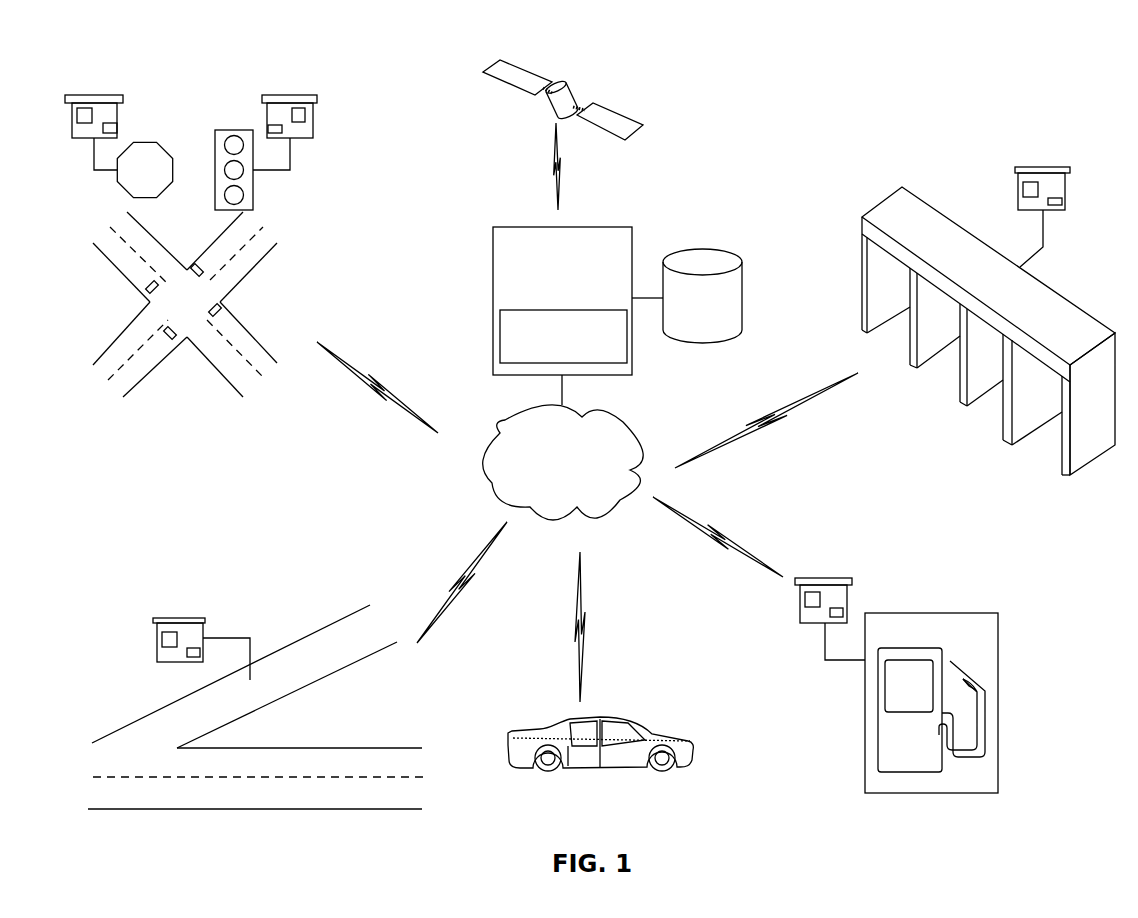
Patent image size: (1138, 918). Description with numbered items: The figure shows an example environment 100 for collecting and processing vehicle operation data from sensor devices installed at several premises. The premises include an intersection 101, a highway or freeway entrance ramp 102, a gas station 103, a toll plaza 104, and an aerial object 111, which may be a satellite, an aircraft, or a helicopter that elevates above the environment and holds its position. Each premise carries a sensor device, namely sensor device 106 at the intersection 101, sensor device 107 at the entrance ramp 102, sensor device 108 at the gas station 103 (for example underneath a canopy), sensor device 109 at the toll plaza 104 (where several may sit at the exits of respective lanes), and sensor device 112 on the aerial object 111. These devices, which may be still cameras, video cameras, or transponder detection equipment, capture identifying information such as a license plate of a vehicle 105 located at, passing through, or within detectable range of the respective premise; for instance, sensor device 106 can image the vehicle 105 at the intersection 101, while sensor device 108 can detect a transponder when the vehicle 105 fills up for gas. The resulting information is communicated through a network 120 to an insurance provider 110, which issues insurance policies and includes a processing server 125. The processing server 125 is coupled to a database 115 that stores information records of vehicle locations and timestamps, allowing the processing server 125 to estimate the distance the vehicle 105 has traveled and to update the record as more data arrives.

The environment 100 is at (782, 108).
The intersection 101 is at (350, 203).
The highway or freeway entrance ramp 102 is at (278, 604).
The gas station 103 is at (936, 588).
The toll plaza 104 is at (865, 188).
The vehicle 105 is at (563, 718).
The sensor device 106 is at (313, 115).
The sensor device 107 is at (170, 617).
The sensor device 108 is at (820, 577).
The sensor device 109 is at (1040, 164).
The insurance provider 110 is at (600, 226).
The aerial object 111 is at (567, 56).
The sensor device 112 is at (568, 91).
The database 115 is at (705, 246).
The network 120 is at (517, 413).
The processing server 125 is at (513, 309).